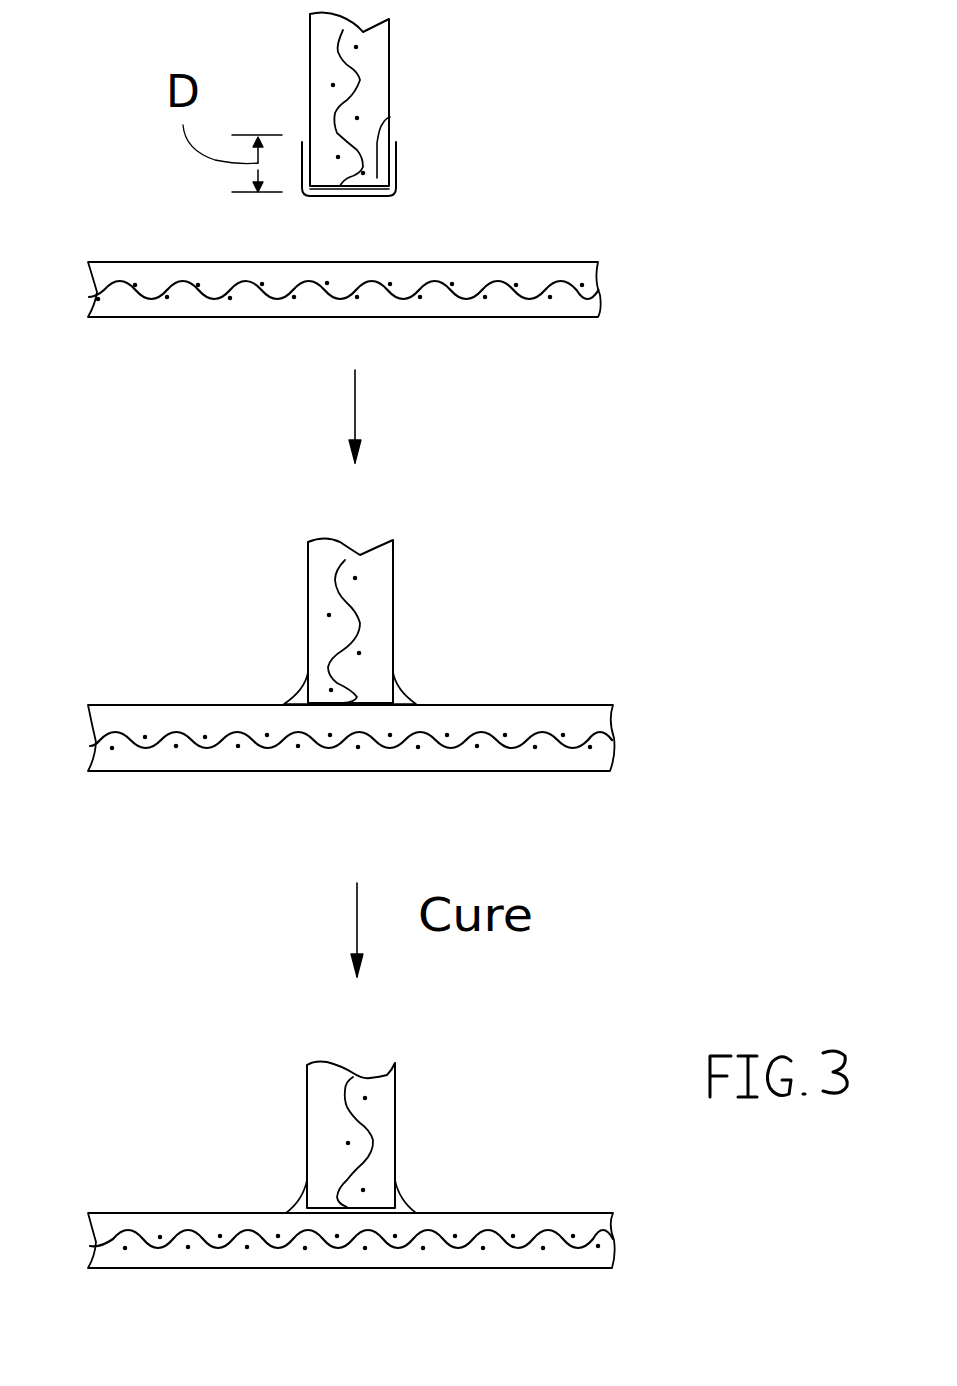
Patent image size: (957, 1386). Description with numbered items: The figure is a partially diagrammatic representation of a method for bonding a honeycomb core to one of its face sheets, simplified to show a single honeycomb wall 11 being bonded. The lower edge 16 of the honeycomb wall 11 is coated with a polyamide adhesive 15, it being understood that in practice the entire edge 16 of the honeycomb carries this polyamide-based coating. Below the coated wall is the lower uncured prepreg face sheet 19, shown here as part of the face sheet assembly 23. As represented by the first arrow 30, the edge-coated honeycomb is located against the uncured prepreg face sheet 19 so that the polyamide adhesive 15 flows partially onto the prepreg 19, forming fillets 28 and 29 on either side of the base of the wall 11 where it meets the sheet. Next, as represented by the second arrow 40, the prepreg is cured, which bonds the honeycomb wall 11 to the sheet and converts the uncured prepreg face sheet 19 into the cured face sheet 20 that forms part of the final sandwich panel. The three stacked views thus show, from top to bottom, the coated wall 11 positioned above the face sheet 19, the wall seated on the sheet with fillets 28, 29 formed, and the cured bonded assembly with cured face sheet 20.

The honeycomb wall 11 is at (377, 72).
The polyamide adhesive coating 15 is at (396, 156).
The honeycomb edge 16 is at (390, 117).
The uncured prepreg face sheet 19 is at (568, 273).
The cured face sheet 20 is at (598, 1222).
The base panel assembly 23 is at (377, 255).
The fillet 28 is at (297, 695).
The fillet 29 is at (400, 695).
The arrow 30 is at (357, 410).
The arrow 40 is at (355, 913).